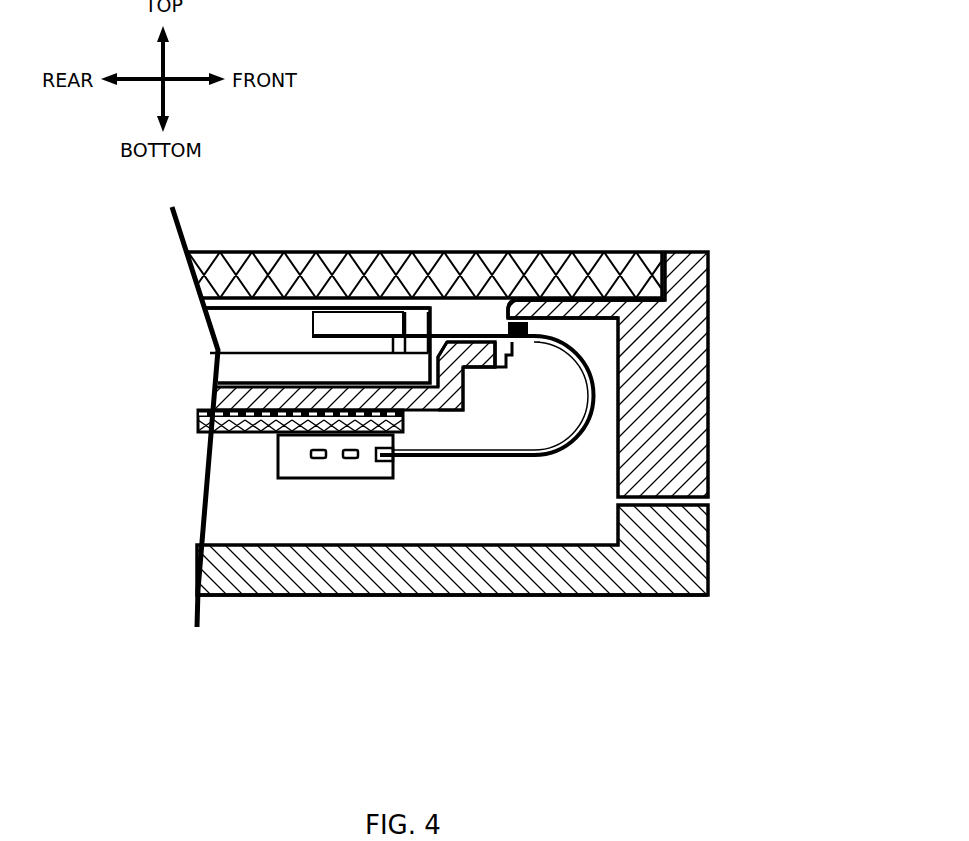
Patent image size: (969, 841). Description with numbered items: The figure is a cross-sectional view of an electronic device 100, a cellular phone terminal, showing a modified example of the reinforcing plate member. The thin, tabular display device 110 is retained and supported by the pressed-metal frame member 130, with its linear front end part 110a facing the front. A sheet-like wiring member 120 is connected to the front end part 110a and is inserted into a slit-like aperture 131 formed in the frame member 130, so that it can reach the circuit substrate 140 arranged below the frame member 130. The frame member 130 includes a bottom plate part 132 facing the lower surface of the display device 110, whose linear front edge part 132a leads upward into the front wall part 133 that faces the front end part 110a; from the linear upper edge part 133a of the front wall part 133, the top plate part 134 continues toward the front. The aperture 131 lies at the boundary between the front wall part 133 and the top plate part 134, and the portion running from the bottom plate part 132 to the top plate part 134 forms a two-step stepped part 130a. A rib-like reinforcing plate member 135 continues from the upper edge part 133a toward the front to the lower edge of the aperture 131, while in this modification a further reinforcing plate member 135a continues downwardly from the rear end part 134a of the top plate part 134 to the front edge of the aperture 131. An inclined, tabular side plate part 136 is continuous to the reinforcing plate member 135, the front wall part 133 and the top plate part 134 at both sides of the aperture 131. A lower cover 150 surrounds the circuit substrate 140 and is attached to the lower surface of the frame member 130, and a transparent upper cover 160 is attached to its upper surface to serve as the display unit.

The electronic device 100 is at (733, 88).
The display device 110 is at (237, 327).
The front end part 110a is at (428, 305).
The wiring member 120 is at (582, 552).
The frame member 130 is at (700, 325).
The stepped part 130a is at (493, 385).
The aperture 131 is at (508, 347).
The bottom plate part 132 is at (213, 396).
The front edge part 132a is at (445, 412).
The front wall part 133 is at (458, 372).
The upper edge part 133a is at (461, 340).
The top plate part 134 is at (613, 252).
The rear end part 134a is at (543, 250).
The reinforcing plate member 135 is at (473, 360).
The reinforcing plate member 135a is at (521, 325).
The side plate part 136 is at (433, 338).
The circuit substrate 140 is at (237, 430).
The lower cover 150 is at (338, 598).
The upper cover 160 is at (337, 278).